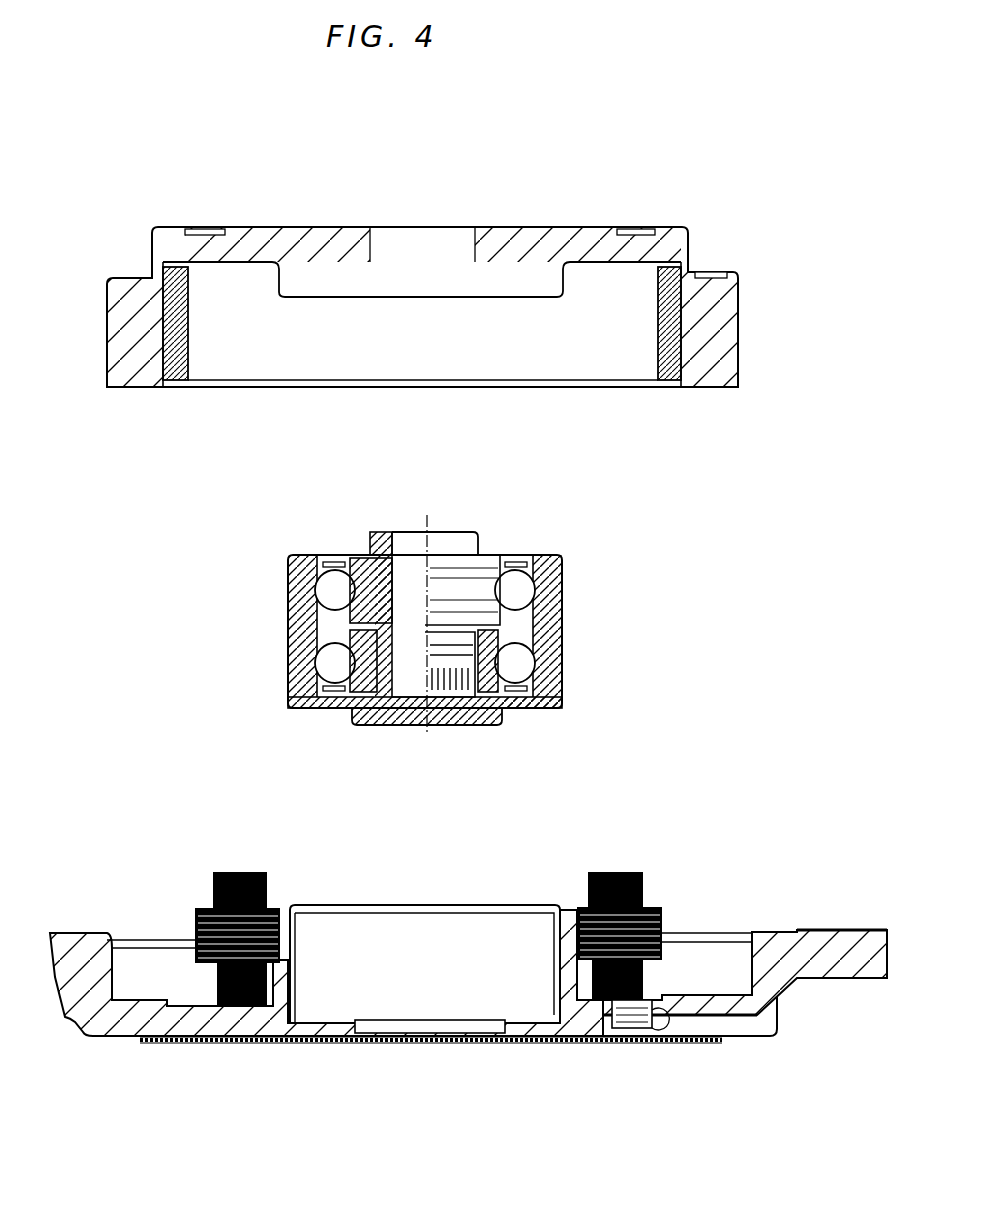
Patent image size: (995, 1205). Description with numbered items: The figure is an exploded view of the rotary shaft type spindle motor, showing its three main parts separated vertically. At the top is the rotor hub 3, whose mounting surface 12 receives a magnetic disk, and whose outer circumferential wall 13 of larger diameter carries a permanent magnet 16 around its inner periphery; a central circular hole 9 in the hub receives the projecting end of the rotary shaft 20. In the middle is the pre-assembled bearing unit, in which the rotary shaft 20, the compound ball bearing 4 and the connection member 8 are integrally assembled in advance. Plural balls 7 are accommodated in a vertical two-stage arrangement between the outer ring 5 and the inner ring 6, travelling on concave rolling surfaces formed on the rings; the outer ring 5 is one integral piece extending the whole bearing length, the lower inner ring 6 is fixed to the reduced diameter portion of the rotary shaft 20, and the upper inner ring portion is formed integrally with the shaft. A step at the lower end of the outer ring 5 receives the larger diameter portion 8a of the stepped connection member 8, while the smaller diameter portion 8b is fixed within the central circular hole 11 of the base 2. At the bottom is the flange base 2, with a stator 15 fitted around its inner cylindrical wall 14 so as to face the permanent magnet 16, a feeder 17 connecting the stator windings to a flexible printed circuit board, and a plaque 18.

The base 2 is at (314, 1058).
The rotor hub 3 is at (279, 206).
The compound ball bearing 4 is at (560, 627).
The outer ring 5 is at (300, 619).
The inner ring 6 is at (356, 555).
The balls 7 is at (330, 668).
The connection member 8 is at (443, 730).
The larger diameter portion 8a is at (528, 708).
The smaller diameter portion 8b is at (482, 712).
The central circular hole 9 is at (381, 240).
The central circular hole 11 is at (490, 1043).
The mounting surface 12 is at (708, 270).
The outer circumferential wall 13 is at (141, 375).
The inner cylindrical wall 14 is at (278, 978).
The stator 15 is at (200, 908).
The permanent magnet 16 is at (189, 322).
The feeder 17 is at (637, 1033).
The plaque 18 is at (236, 1045).
The rotary shaft 20 is at (440, 530).